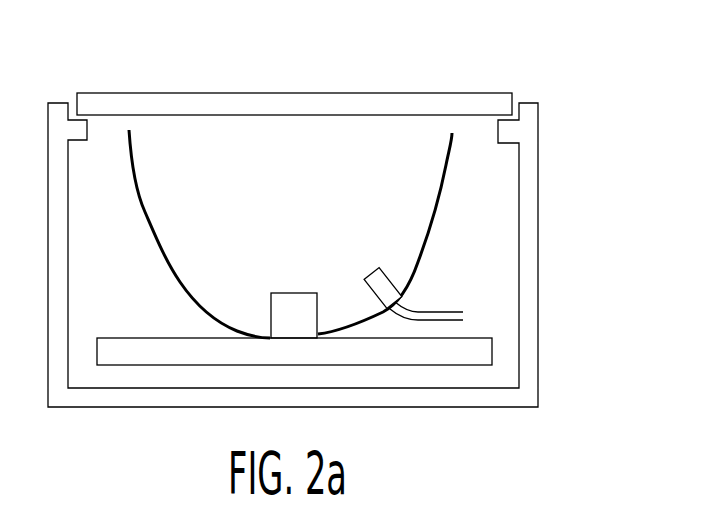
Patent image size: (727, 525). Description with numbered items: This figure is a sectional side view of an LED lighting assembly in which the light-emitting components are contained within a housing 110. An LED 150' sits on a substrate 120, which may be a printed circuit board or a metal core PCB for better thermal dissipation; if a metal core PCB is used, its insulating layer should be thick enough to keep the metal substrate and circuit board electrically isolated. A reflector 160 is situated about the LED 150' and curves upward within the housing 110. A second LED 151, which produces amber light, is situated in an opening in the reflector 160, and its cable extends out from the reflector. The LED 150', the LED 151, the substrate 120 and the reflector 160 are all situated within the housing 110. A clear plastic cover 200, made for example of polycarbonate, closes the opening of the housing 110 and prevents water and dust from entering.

The housing 110 is at (540, 215).
The clear plastic cover 200 is at (395, 93).
The reflector 160 is at (142, 193).
The LED 150' is at (294, 265).
The LED 151 is at (378, 267).
The substrate 120 is at (492, 352).